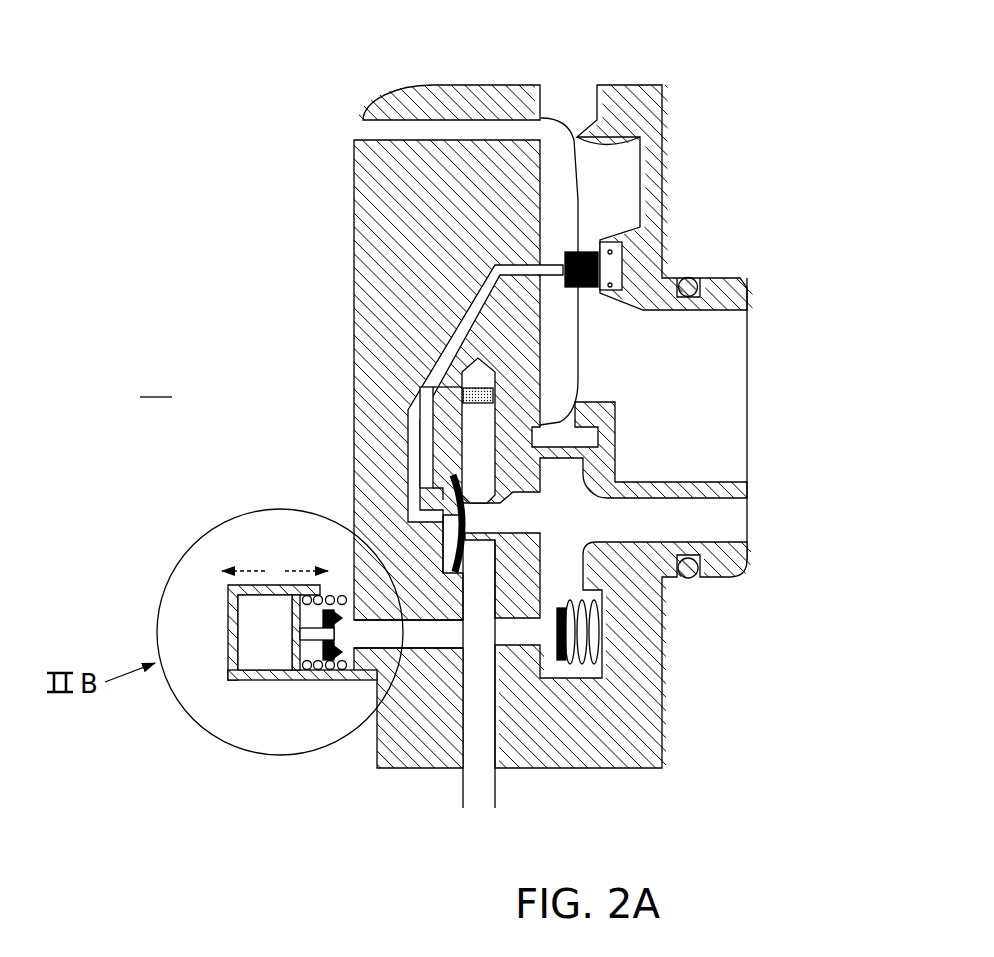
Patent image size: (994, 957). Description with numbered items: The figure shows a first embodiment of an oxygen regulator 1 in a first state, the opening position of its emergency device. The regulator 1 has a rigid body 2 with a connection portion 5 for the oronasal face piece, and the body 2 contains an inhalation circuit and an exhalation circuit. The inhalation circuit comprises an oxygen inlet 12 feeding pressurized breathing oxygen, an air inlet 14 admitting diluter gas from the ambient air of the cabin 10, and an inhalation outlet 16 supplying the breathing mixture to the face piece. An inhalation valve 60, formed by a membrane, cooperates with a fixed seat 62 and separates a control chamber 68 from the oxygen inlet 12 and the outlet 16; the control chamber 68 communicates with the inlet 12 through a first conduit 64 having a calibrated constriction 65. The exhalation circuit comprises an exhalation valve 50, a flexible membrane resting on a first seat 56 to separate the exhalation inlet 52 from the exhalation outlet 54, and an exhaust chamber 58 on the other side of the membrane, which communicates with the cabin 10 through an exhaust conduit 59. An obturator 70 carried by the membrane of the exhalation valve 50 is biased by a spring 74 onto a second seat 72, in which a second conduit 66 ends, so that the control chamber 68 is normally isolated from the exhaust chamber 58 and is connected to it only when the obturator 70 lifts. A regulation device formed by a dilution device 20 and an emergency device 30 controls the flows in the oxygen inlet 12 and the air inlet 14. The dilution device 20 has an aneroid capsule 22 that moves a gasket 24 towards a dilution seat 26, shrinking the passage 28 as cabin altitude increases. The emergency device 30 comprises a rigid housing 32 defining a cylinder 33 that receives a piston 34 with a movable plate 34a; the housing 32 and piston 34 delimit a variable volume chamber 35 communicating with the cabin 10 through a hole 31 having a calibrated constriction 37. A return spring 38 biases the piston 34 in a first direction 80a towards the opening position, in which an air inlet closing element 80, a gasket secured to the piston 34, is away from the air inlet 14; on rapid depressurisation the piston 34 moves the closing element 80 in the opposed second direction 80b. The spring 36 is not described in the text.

The regulator 1 is at (735, 825).
The rigid body 2 is at (354, 237).
The connection portion 5 is at (700, 590).
The cabin 10 is at (156, 383).
The oxygen inlet 12 is at (473, 783).
The air inlet 14 is at (405, 722).
The inhalation outlet 16 is at (725, 520).
The dilution device 20 is at (590, 690).
The aneroid capsule 22 is at (600, 634).
The gasket 24 is at (587, 680).
The dilution seat 26 is at (540, 652).
The passage 28 is at (552, 660).
The emergency device 30 is at (497, 478).
The hole 31 is at (262, 678).
The rigid housing 32 is at (368, 695).
The cylinder 33 is at (232, 608).
The piston 34 is at (395, 638).
The movable plate 34a is at (300, 598).
The variable volume chamber 35 is at (258, 634).
The spring 36 is at (320, 676).
The calibrated constriction 37 is at (252, 680).
The return spring 38 is at (303, 596).
The exhalation valve 50 is at (582, 187).
The exhalation inlet 52 is at (663, 340).
The exhalation outlet 54 is at (573, 100).
The first seat 56 is at (580, 132).
The exhaust chamber 58 is at (555, 186).
The exhaust conduit 59 is at (431, 128).
The inhalation valve 60 is at (447, 530).
The fixed seat 62 is at (458, 483).
The first conduit 64 is at (433, 437).
The calibrated constriction 65 is at (427, 462).
The second conduit 66 is at (455, 322).
The control chamber 68 is at (445, 500).
The obturator 70 is at (585, 255).
The second seat 72 is at (563, 268).
The spring 74 is at (614, 268).
The air inlet closing element 80 is at (343, 680).
The first direction 80a is at (244, 554).
The second direction 80b is at (313, 554).